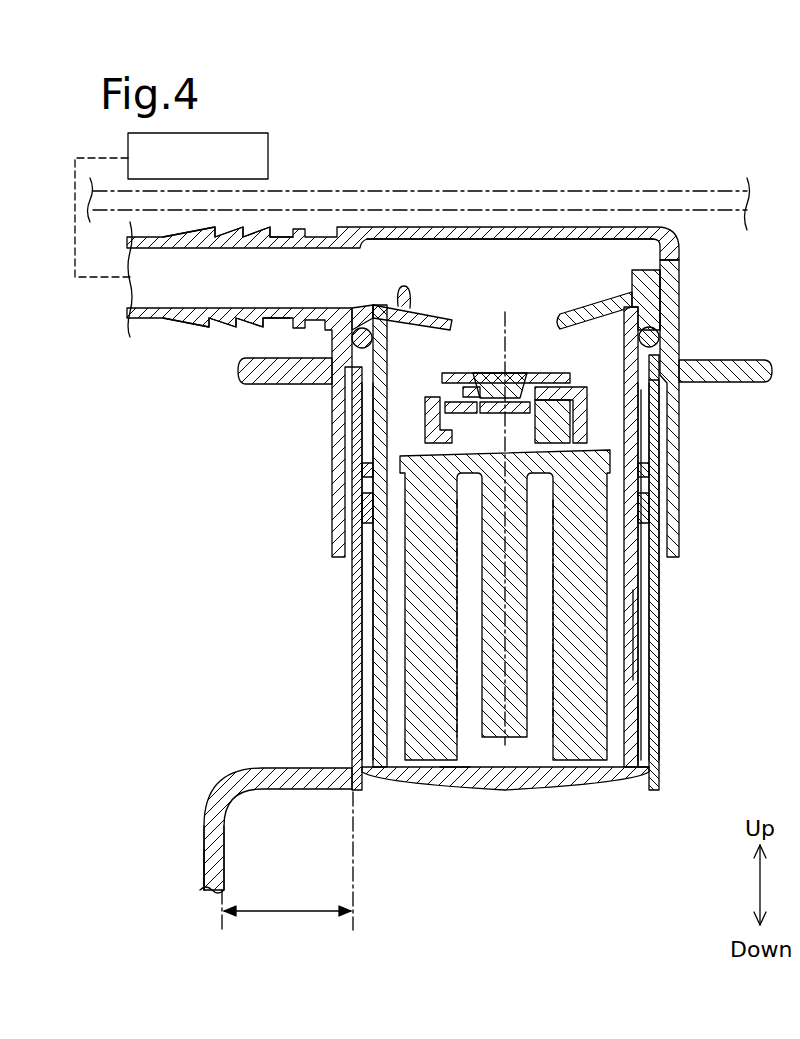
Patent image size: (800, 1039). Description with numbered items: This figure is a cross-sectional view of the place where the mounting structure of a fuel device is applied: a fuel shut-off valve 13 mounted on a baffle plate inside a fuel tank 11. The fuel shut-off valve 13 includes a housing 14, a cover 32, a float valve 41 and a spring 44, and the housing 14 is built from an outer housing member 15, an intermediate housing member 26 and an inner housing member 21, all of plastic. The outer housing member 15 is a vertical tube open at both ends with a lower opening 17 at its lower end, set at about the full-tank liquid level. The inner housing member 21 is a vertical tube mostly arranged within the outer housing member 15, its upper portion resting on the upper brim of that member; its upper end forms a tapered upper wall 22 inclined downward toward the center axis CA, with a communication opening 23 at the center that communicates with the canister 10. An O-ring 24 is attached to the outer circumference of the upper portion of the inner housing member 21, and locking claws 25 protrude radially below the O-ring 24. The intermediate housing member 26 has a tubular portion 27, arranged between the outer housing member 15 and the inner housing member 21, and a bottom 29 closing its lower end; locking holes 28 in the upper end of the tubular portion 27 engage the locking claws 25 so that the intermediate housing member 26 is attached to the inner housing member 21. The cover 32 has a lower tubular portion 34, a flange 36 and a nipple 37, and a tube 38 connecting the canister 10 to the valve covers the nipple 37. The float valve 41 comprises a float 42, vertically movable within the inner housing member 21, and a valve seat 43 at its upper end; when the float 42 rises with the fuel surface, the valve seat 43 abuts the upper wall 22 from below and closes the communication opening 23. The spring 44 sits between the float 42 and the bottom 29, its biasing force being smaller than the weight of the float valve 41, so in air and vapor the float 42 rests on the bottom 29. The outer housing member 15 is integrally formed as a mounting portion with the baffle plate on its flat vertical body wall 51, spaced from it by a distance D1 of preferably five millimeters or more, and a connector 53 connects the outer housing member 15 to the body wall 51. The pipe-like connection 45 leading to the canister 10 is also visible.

The canister 10 is at (228, 134).
The fuel tank 11 is at (597, 191).
The fuel shut-off valve 13 is at (401, 215).
The housing 14 is at (716, 597).
The outer housing member 15 is at (656, 637).
The lower opening 17 is at (654, 798).
The inner housing member 21 is at (636, 598).
The upper wall 22 is at (577, 312).
The communication opening 23 is at (459, 318).
The O-ring 24 is at (662, 335).
The locking claw 25 is at (372, 477).
The intermediate housing member 26 is at (643, 655).
The tubular portion 27 is at (650, 708).
The locking hole 28 is at (362, 490).
The bottom 29 is at (597, 776).
The cover 32 is at (668, 294).
The lower tubular portion 34 is at (681, 420).
The flange 36 is at (260, 360).
The nipple 37 is at (268, 236).
The tube 38 is at (186, 328).
The float valve 41 is at (505, 536).
The float 42 is at (600, 582).
The valve seat 43 is at (462, 378).
The spring 44 is at (445, 780).
The pipe 45 is at (401, 215).
The body wall 51 is at (205, 840).
The connector 53 is at (290, 767).
The center axis CA is at (508, 332).
The distance D1 is at (283, 913).